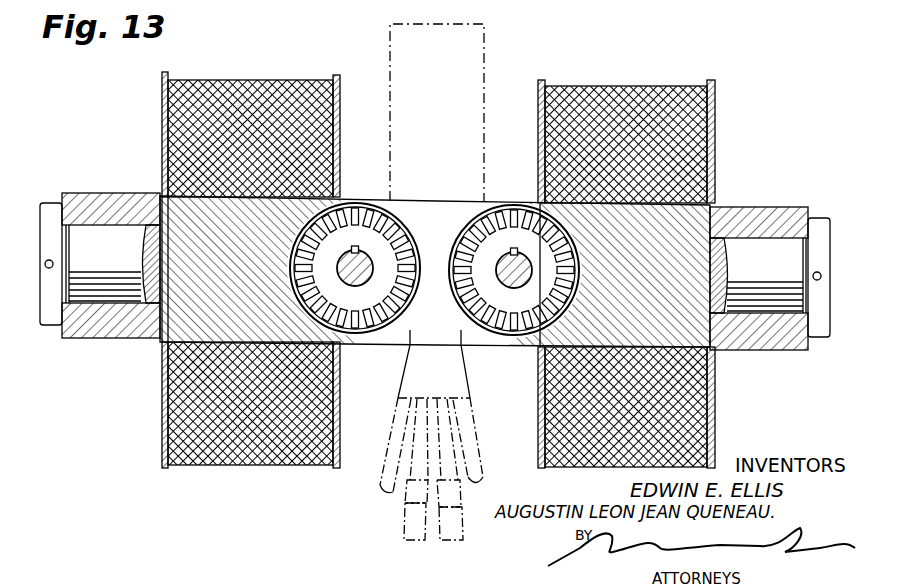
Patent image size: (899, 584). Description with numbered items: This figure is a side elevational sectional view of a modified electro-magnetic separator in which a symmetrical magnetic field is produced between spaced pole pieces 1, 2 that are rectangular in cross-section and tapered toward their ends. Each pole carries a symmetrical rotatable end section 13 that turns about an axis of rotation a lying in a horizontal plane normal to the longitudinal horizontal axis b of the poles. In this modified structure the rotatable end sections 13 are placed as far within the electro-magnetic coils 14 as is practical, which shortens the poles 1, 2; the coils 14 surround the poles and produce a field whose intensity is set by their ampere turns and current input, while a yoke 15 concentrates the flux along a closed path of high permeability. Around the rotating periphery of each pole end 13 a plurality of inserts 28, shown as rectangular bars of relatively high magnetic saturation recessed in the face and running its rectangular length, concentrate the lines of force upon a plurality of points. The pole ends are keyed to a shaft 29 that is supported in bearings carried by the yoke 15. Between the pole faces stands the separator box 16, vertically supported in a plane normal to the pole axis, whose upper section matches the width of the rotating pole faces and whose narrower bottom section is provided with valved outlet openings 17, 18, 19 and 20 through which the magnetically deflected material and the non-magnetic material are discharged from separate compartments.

The pole piece 1 is at (161, 197).
The pole piece 2 is at (690, 214).
The rotatable pole end 13 is at (367, 330).
The electro-magnetic coil 14 is at (248, 81).
The yoke 15 is at (440, 338).
The separator box 16 is at (485, 58).
The valved outlet opening 17 is at (383, 489).
The valved outlet opening 18 is at (411, 541).
The valved outlet opening 19 is at (455, 541).
The valved outlet opening 20 is at (478, 489).
The insert 28 is at (352, 200).
The shaft 29 is at (495, 268).
The axis of rotation a is at (434, 269).
The longitudinal horizontal axis b is at (428, 270).